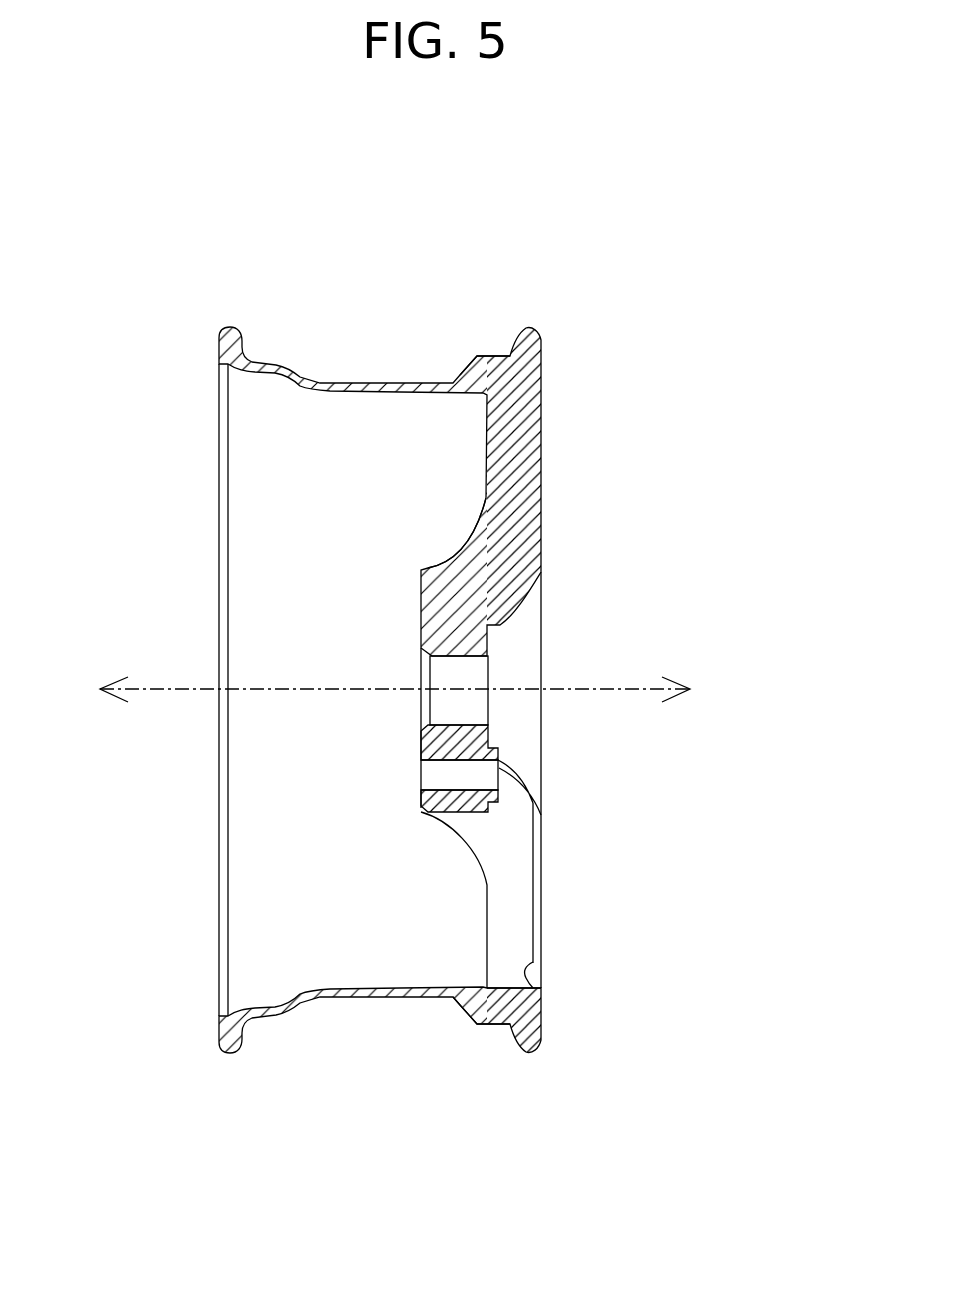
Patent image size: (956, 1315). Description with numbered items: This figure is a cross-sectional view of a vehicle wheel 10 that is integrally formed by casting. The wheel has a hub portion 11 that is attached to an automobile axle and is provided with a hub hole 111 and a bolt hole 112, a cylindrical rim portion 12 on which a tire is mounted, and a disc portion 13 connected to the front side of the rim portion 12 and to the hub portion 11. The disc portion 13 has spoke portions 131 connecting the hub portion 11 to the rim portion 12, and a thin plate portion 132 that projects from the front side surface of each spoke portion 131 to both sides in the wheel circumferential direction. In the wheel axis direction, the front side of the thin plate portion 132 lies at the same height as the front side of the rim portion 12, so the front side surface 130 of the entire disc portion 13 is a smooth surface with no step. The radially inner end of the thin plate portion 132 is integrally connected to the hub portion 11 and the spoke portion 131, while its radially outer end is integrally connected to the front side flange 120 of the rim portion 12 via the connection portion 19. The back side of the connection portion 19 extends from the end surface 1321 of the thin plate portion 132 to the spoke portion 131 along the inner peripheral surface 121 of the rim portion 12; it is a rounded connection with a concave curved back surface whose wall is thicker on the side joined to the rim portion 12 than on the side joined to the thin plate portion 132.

The vehicle wheel 10 is at (610, 737).
The hub portion 11 is at (418, 617).
The hub hole 111 is at (477, 676).
The bolt hole 112 is at (442, 776).
The rim portion 12 is at (495, 353).
The front side flange 120 is at (494, 1022).
The inner peripheral surface 121 is at (500, 978).
The disc portion 13 is at (546, 594).
The front side surface 130 is at (546, 464).
The spoke portion 131 is at (486, 436).
The thin plate portion 132 is at (546, 826).
The end surface 1321 is at (542, 884).
The connection portion 19 is at (534, 970).